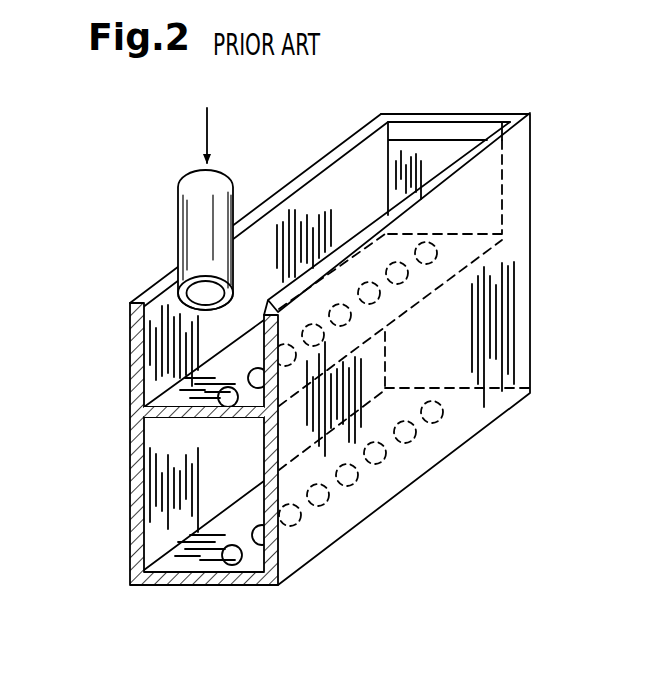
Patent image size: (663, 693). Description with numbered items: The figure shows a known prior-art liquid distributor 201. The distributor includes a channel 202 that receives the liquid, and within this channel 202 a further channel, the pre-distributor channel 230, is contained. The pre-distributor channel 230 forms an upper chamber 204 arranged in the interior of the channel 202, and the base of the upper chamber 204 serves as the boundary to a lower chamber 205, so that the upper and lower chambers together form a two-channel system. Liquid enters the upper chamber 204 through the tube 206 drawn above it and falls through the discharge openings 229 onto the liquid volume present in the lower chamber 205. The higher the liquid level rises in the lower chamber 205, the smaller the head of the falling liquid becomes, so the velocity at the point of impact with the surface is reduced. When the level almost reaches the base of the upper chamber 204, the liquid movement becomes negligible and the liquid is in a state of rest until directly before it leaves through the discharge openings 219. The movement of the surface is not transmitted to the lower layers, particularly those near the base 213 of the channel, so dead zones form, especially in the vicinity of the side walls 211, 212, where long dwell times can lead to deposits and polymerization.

The liquid distributor 201 is at (100, 268).
The channel 202 is at (418, 163).
The upper chamber 204 is at (155, 345).
The lower chamber 205 is at (146, 482).
The inlet tube 206 is at (192, 203).
The side wall 211 is at (437, 183).
The side wall 212 is at (292, 180).
The base 213 is at (152, 584).
The discharge openings 219 is at (232, 566).
The discharge openings 229 is at (140, 422).
The pre-distributor channel 230 is at (140, 385).